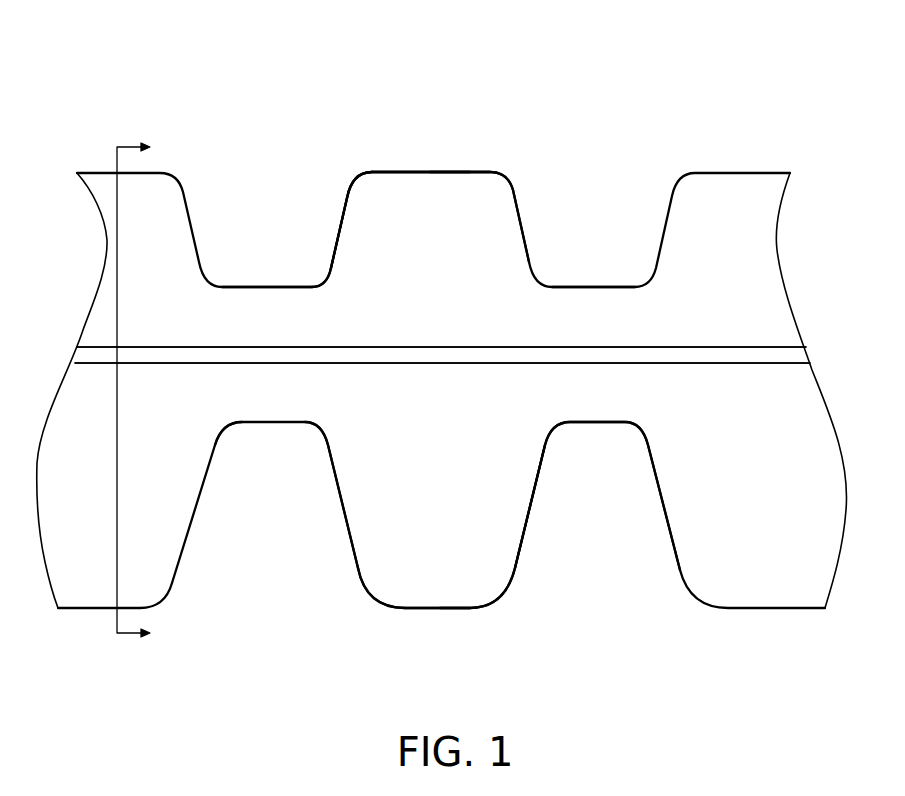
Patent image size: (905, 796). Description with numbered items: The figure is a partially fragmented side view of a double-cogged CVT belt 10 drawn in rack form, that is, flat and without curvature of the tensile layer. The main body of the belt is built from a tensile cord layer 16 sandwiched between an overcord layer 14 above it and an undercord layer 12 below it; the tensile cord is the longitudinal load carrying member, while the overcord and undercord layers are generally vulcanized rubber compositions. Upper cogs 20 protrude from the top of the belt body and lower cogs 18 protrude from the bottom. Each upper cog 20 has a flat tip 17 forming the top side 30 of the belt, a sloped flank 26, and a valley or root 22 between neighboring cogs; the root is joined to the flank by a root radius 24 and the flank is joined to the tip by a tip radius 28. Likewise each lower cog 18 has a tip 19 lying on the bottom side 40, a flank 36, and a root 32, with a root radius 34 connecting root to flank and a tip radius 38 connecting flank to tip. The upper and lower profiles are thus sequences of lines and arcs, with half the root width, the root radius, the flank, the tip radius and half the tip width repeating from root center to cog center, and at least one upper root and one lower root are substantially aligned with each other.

The double-cogged CVT belt 10 is at (682, 89).
The undercord layer 12 is at (598, 398).
The overcord layer 14 is at (595, 312).
The tensile cord layer 16 is at (788, 352).
The tip 17 is at (450, 172).
The lower cogs 18 is at (462, 517).
The tip 19 is at (450, 609).
The upper cogs 20 is at (468, 220).
The root 22 is at (268, 287).
The root radius 24 is at (318, 284).
The flank 26 is at (340, 232).
The tip radius 28 is at (357, 172).
The top side 30 is at (432, 172).
The root 32 is at (266, 424).
The root radius 34 is at (306, 423).
The flank 36 is at (336, 515).
The tip radius 38 is at (374, 597).
The bottom side 40 is at (434, 609).